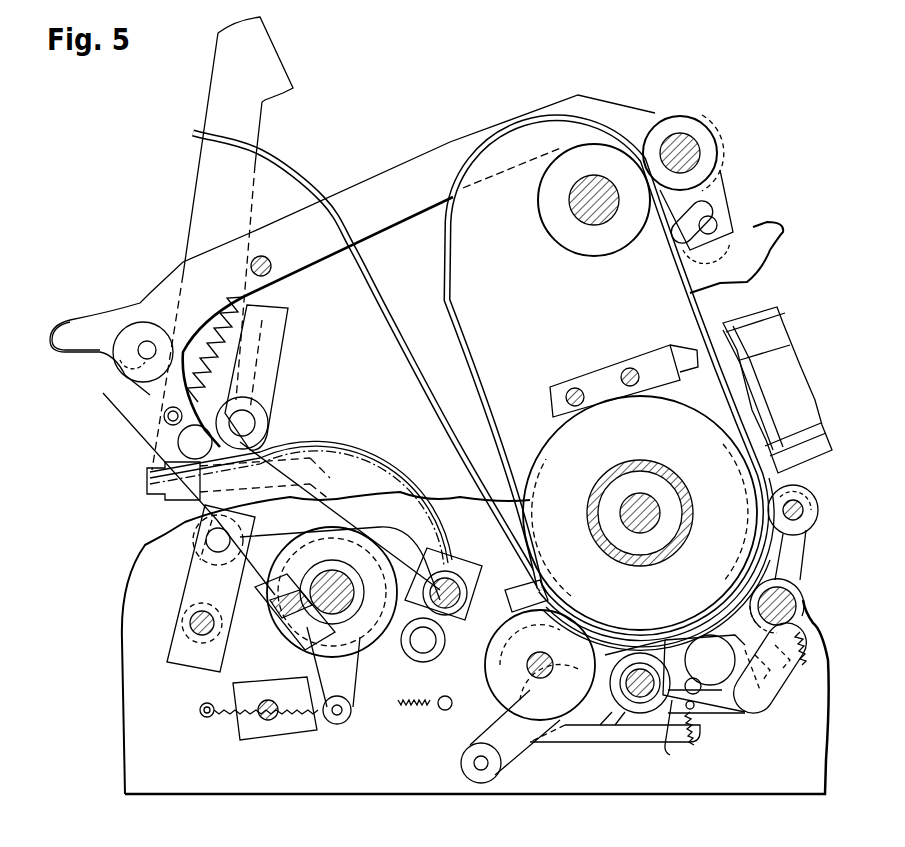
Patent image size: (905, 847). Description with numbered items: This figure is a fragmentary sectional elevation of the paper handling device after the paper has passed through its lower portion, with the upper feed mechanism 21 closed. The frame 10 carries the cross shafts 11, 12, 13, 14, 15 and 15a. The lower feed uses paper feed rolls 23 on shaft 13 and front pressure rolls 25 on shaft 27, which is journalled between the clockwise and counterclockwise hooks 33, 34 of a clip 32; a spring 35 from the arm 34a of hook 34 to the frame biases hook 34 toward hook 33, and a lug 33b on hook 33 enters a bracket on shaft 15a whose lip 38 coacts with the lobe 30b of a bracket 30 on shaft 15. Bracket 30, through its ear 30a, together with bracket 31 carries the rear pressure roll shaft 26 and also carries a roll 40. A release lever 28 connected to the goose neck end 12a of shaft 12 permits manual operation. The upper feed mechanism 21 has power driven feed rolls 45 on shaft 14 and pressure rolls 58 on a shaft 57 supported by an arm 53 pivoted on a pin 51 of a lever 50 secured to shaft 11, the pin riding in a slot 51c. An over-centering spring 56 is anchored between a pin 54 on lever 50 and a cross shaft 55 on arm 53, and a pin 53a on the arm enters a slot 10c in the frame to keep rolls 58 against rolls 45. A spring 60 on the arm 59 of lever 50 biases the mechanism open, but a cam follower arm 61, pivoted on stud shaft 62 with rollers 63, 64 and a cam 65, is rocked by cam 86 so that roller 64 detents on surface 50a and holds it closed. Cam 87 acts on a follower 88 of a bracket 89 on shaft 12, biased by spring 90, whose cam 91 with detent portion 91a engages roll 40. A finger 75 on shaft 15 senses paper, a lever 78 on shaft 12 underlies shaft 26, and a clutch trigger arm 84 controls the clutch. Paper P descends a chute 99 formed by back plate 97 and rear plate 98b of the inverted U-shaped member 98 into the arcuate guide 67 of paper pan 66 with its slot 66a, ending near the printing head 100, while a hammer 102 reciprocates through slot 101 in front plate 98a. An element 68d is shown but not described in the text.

The frame 10 is at (122, 710).
The slot 10c is at (716, 213).
The cross shaft 11 is at (352, 578).
The cross shaft 12 is at (475, 538).
The goose neck end 12a is at (384, 479).
The cross shaft 13 is at (610, 494).
The cross shaft 14 is at (592, 196).
The cross shaft 15 is at (642, 658).
The cross shaft 15a is at (802, 596).
The upper feed mechanism 21 is at (665, 108).
The paper feed rolls 23 is at (549, 444).
The front pressure rolls 25 is at (816, 514).
The shaft 26 is at (548, 653).
The shaft 27 is at (800, 498).
The release lever 28 is at (200, 198).
The bracket 30 is at (554, 748).
The ear 30a is at (515, 586).
The lobe 30b is at (740, 706).
The bracket 31 is at (582, 744).
The clip 32 is at (775, 695).
The clockwise hook 33 is at (766, 504).
The lug 33b is at (770, 704).
The counterclockwise hook 34 is at (808, 547).
The arm 34a is at (718, 714).
The spring 35 is at (698, 746).
The lip 38 is at (680, 630).
The roll 40 is at (522, 759).
The power driven feed rolls 45 is at (568, 250).
The lever 50 is at (258, 610).
The detent portion 50a is at (255, 476).
The pin 51 is at (143, 341).
The slot 51c is at (128, 360).
The arm 53 is at (400, 172).
The pin 53a is at (83, 298).
The pin 54 is at (163, 415).
The cross shaft 55 is at (275, 271).
The over-centering spring 56 is at (216, 349).
The shaft 57 is at (692, 145).
The pressure rolls 58 is at (717, 174).
The arm 59 is at (345, 724).
The spring 60 is at (218, 718).
The cam follower arm 61 is at (193, 576).
The stud shaft 62 is at (200, 620).
The roller 63 is at (206, 542).
The roller 64 is at (268, 423).
The cam 65 is at (250, 341).
The paper pan 66 is at (610, 630).
The slot 66a is at (718, 590).
The arcuate guide 67 is at (575, 620).
The spring 68d is at (808, 656).
The finger 75 is at (700, 620).
The lever 78 is at (625, 738).
The clutch trigger arm 84 is at (305, 732).
The cam 86 is at (381, 528).
The cam 87 is at (300, 643).
The follower 88 is at (418, 661).
The bracket 89 is at (426, 759).
The spring 90 is at (408, 713).
The cam 91 is at (489, 712).
The detent portion 91a is at (455, 757).
The back plate 97 is at (462, 378).
The inverted U-shaped member 98 is at (438, 271).
The front plate 98a is at (684, 294).
The rear plate 98b is at (490, 370).
The chute 99 is at (442, 340).
The printing head 100 is at (805, 343).
The slot 101 is at (716, 344).
The hammer 102 is at (680, 348).
The sheet of paper P is at (708, 274).